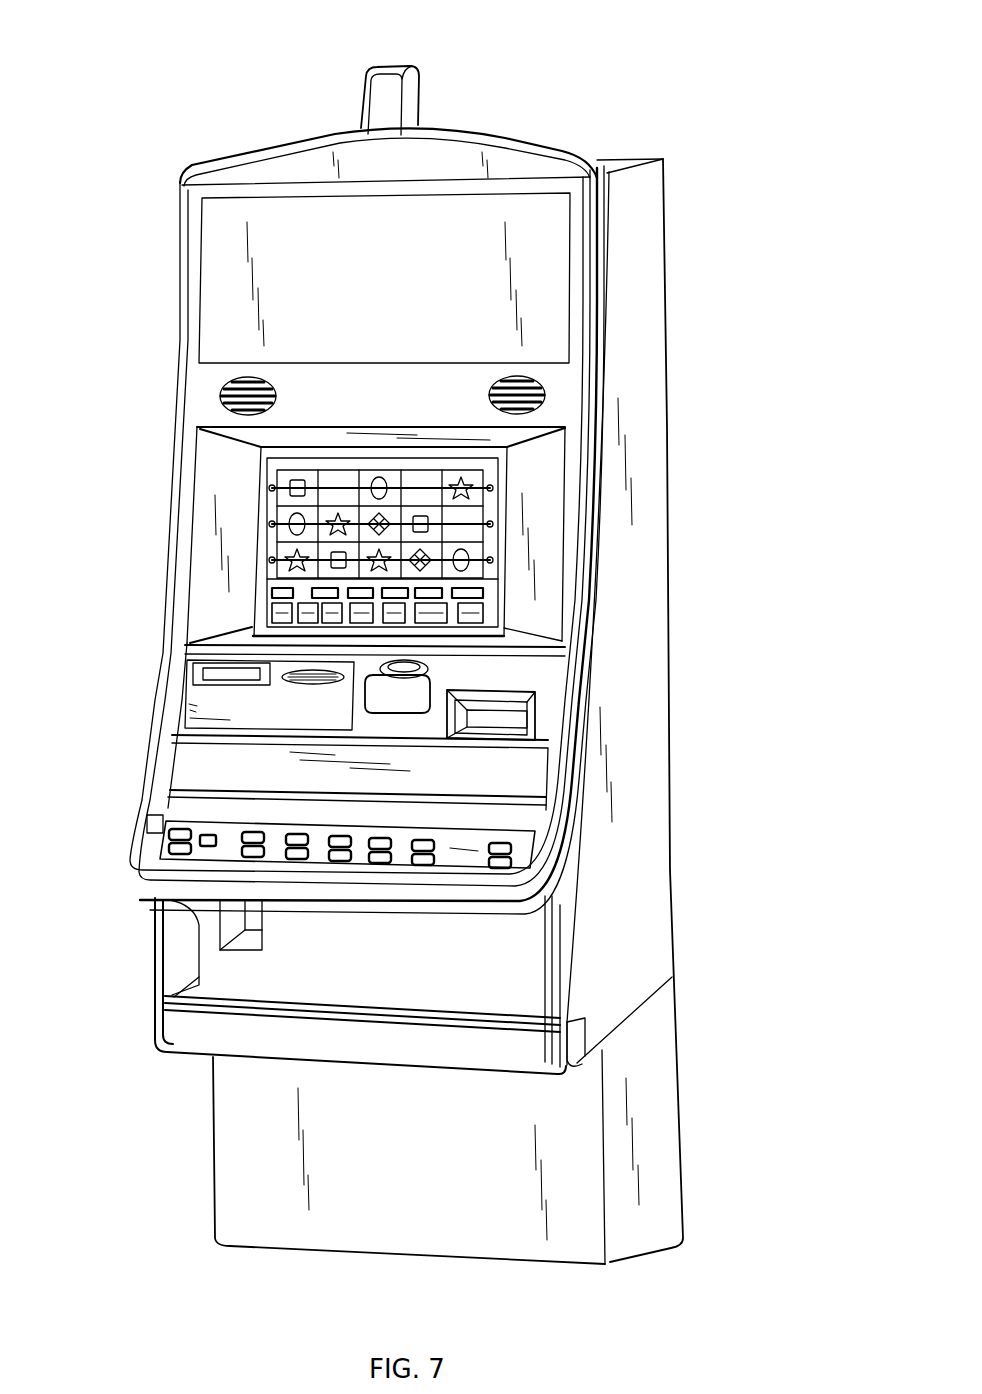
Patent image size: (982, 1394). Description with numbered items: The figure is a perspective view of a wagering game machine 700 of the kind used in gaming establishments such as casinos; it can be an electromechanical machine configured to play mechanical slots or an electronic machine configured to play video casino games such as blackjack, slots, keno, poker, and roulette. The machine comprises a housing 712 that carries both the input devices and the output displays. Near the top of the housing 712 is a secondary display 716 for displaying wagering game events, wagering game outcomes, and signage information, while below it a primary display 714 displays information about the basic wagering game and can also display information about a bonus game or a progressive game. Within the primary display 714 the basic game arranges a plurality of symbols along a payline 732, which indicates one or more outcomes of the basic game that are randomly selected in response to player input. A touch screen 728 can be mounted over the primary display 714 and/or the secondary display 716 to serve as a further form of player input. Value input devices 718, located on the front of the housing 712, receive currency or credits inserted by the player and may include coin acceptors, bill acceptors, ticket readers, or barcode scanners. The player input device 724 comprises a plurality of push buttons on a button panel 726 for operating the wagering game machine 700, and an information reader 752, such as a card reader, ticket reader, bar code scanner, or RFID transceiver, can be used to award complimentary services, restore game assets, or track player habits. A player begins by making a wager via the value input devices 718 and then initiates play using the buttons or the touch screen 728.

The wagering game machine 700 is at (142, 24).
The housing 712 is at (655, 237).
The secondary display 716 is at (247, 278).
The payline 732 is at (470, 450).
The primary display 714 is at (255, 543).
The touch screen 728 is at (500, 613).
The value input devices 718 is at (432, 669).
The information reader 752 is at (282, 683).
The button panel 726 is at (237, 847).
The player input device 724 is at (520, 846).